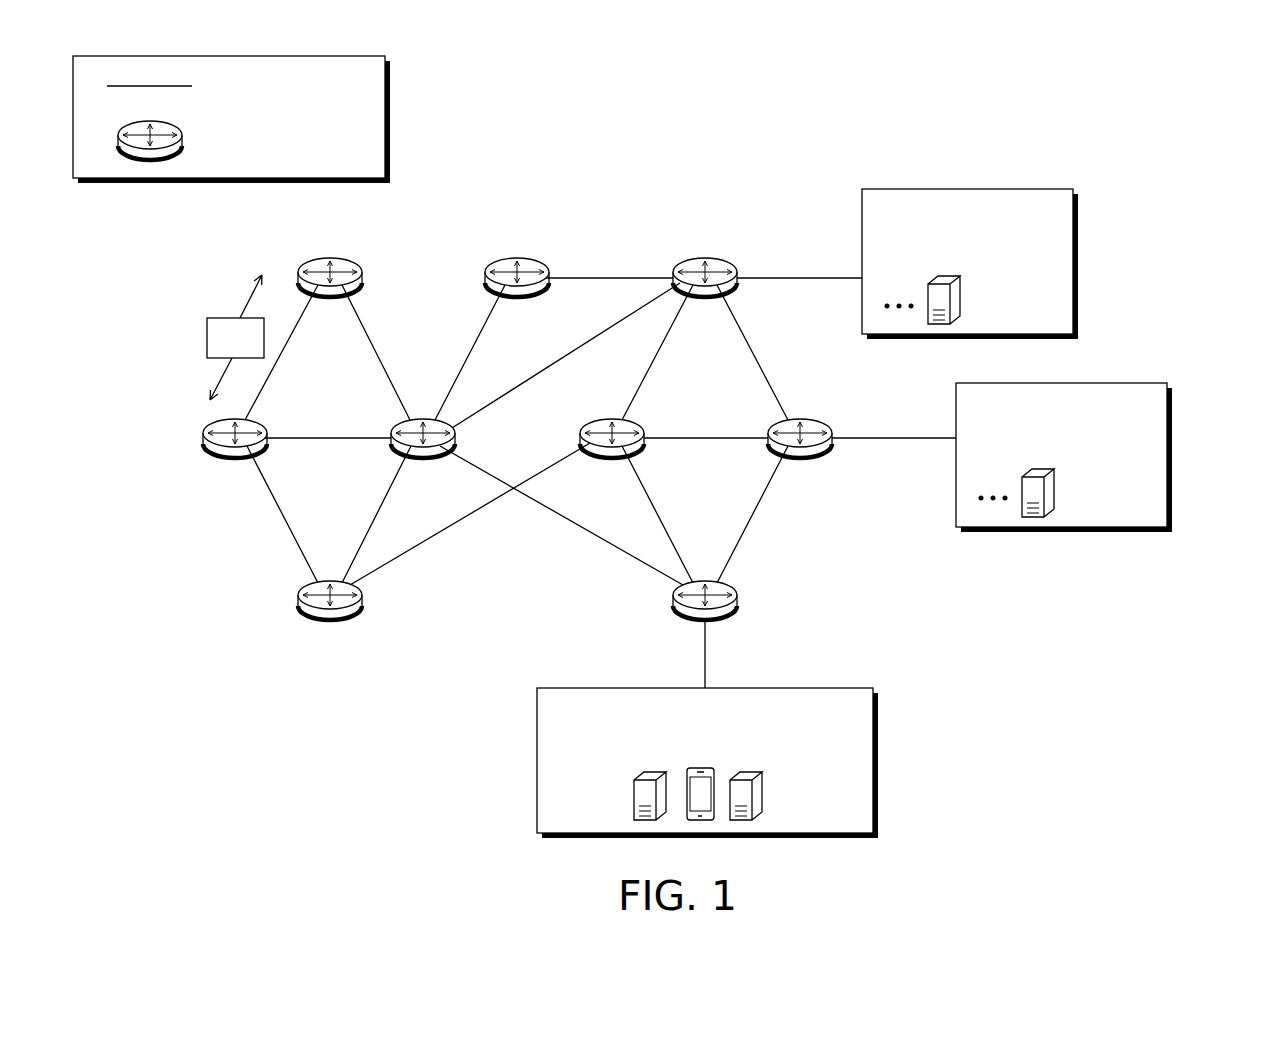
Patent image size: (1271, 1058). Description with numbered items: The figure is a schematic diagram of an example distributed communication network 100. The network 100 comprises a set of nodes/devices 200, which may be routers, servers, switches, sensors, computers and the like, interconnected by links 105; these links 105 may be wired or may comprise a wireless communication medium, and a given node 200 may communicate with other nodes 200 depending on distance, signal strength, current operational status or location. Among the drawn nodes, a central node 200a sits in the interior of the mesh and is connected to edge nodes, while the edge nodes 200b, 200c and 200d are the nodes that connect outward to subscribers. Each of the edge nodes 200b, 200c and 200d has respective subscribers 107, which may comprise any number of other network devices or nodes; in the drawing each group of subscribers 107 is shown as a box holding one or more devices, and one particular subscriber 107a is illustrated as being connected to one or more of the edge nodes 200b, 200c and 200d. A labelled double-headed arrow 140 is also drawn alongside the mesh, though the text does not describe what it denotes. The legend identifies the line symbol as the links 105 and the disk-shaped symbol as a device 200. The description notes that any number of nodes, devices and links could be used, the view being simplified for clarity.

The communication network 100 is at (1177, 117).
The links 105 is at (531, 382).
The nodes/devices 200 is at (333, 370).
The central node 200a is at (643, 412).
The edge node 200b is at (741, 254).
The edge node 200c is at (835, 412).
The edge node 200d is at (741, 576).
The data packets / traffic 140 is at (219, 353).
The subscribers 107 is at (950, 253).
The subscriber 107a is at (972, 295).